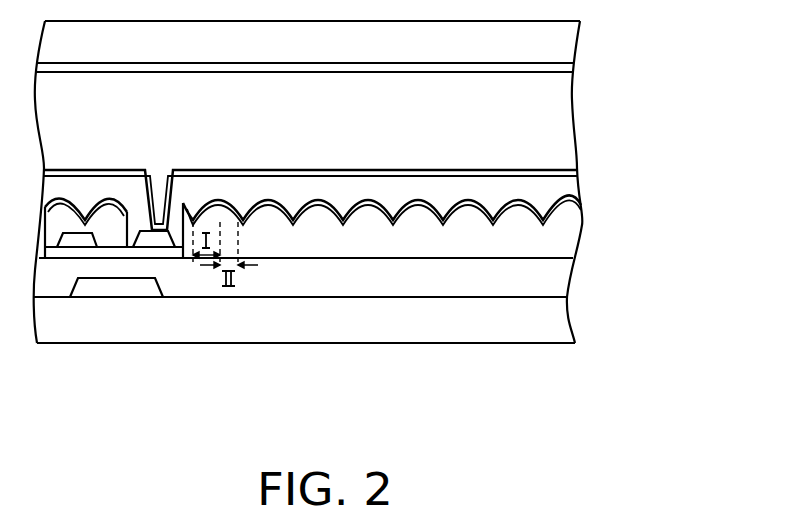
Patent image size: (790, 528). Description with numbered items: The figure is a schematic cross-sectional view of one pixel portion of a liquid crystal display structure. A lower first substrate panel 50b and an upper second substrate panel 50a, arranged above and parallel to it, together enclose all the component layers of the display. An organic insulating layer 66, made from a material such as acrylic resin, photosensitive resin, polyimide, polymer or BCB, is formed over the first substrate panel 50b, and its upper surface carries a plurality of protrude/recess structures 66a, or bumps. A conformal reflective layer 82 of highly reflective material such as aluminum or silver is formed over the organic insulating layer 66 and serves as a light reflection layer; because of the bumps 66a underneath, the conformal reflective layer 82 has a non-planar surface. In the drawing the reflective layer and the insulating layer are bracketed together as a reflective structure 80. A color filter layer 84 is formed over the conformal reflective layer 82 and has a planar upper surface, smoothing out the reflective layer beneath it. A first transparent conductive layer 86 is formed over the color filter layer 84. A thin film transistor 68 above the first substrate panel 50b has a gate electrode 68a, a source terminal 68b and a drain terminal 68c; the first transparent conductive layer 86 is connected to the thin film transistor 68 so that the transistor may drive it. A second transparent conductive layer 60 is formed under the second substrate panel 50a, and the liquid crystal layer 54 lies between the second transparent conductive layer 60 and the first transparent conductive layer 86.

The second substrate panel 50a is at (360, 58).
The first substrate panel 50b is at (357, 332).
The second transparent conductive layer 60 is at (550, 69).
The liquid crystal layer 54 is at (543, 138).
The first transparent conductive layer 86 is at (577, 175).
The color filter layer 84 is at (400, 187).
The conformal reflective layer 82 is at (579, 202).
The organic insulating layer 66 is at (552, 247).
The protrude/recess structures 66a is at (220, 222).
The reflective structure 80 is at (653, 222).
The thin film transistor 68 is at (135, 314).
The gate electrode 68a is at (116, 312).
The source terminal 68b is at (73, 240).
The drain terminal 68c is at (150, 240).